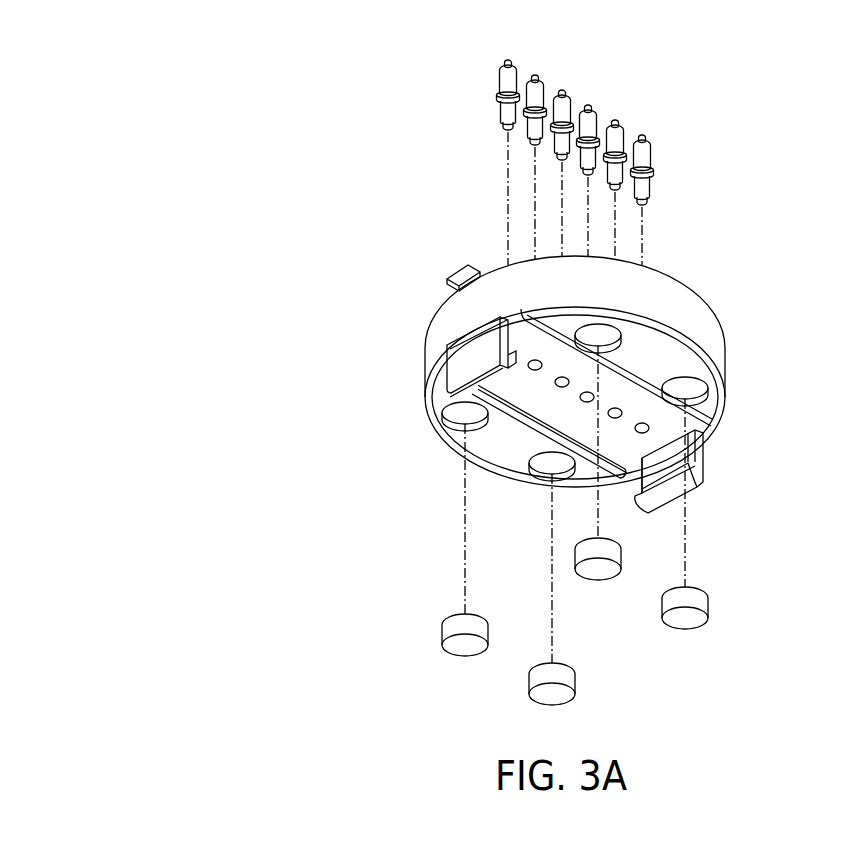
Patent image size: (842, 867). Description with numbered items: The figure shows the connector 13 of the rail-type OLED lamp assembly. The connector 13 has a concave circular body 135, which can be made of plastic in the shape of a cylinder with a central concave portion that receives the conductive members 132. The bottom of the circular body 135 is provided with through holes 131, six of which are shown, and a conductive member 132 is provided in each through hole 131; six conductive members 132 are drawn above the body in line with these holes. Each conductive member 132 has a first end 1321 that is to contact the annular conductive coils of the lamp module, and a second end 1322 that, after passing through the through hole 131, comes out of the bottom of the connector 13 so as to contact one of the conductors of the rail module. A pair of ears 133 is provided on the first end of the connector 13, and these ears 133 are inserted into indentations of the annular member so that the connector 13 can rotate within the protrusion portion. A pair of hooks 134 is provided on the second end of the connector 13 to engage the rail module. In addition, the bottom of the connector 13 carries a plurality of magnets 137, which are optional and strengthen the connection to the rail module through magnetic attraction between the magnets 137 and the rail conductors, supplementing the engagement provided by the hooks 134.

The connector 13 is at (197, 65).
The through hole 131 is at (536, 363).
The conductive member 132 is at (519, 149).
The first end 1321 is at (507, 62).
The second end 1322 is at (508, 125).
The ear 133 is at (447, 281).
The hook 134 is at (458, 358).
The circular body 135 is at (695, 312).
The magnet 137 is at (695, 614).